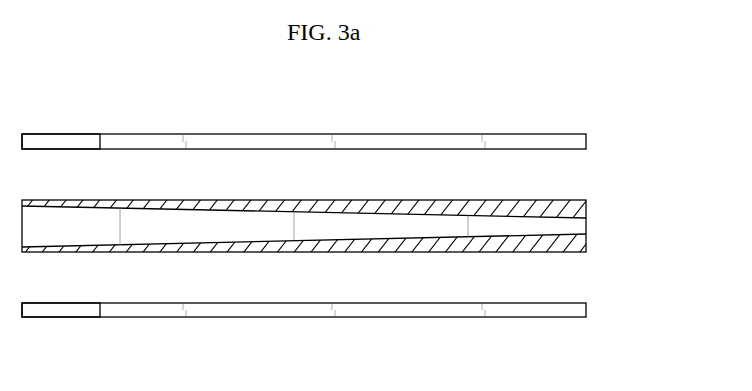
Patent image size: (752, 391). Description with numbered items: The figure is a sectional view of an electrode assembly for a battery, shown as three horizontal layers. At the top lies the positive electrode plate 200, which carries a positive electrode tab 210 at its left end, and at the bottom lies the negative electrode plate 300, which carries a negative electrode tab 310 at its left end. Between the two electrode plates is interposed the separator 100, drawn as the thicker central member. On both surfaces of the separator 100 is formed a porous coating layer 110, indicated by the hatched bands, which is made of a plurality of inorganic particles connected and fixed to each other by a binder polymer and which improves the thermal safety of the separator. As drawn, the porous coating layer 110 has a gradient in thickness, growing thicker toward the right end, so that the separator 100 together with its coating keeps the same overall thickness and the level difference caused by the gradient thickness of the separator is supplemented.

The separator 100 is at (580, 226).
The porous coating layer 110 is at (540, 201).
The positive electrode plate 200 is at (413, 140).
The positive electrode tab 210 is at (63, 140).
The negative electrode plate 300 is at (414, 313).
The negative electrode tab 310 is at (62, 313).